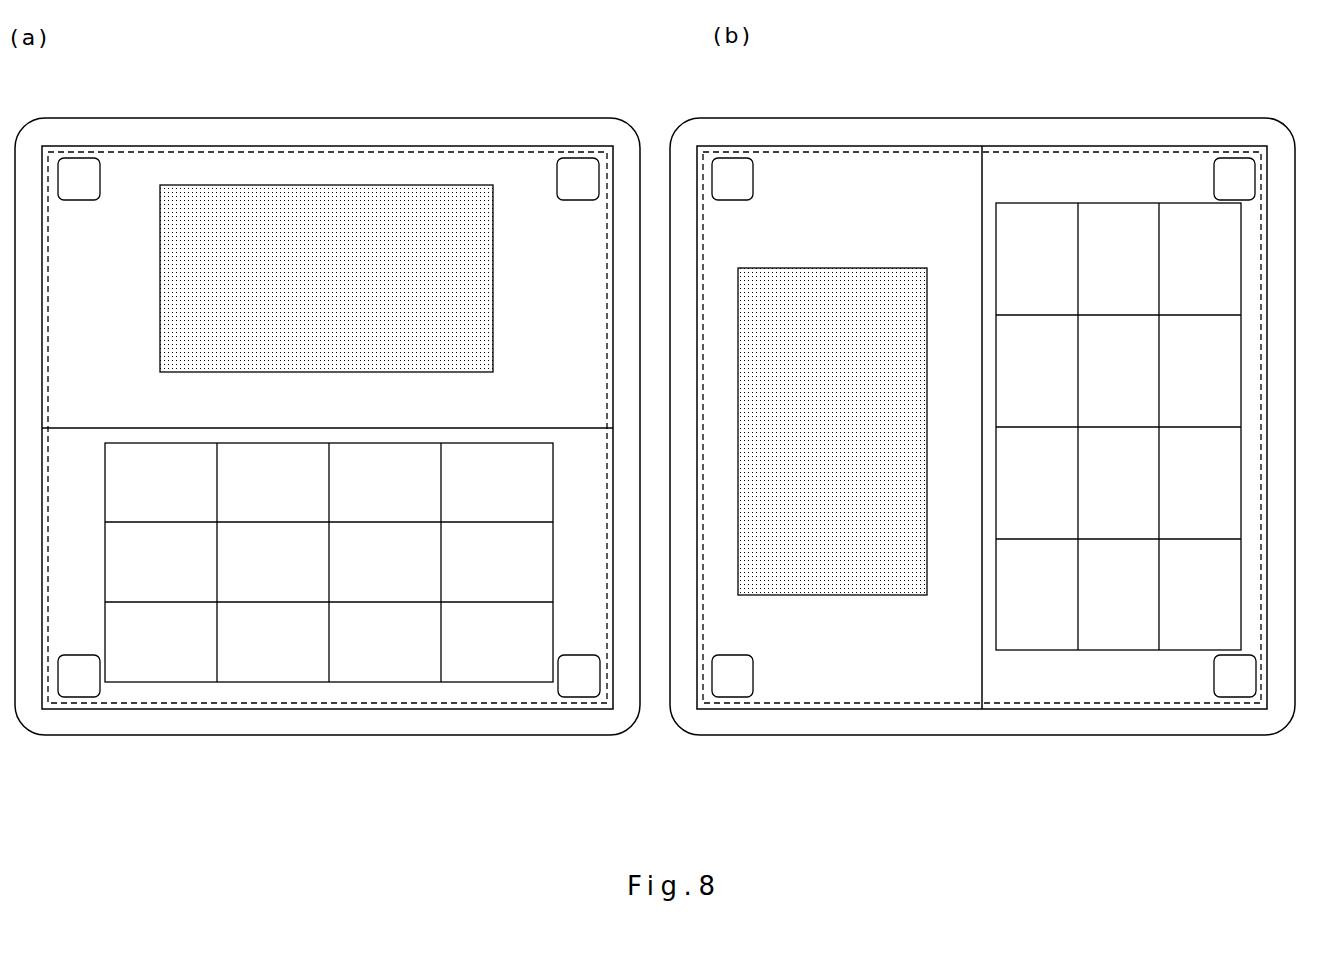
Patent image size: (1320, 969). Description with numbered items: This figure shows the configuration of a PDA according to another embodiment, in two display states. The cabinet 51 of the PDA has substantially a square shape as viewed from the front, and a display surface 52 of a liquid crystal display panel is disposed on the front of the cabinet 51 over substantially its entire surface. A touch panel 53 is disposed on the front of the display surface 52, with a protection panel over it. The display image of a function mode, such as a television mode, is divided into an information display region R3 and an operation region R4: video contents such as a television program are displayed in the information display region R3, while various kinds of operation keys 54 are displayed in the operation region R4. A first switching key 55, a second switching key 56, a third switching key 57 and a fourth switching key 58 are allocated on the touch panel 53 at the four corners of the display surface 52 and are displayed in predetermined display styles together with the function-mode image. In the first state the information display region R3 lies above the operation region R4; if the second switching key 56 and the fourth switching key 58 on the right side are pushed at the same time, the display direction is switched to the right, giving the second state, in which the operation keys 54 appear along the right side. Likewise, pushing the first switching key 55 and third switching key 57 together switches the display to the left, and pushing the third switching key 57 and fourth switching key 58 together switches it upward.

The cabinet 51 is at (442, 118).
The display surface 52 is at (313, 147).
The touch panel 53 is at (193, 147).
The operation keys 54 is at (462, 673).
The first switching key 55 is at (80, 697).
The second switching key 56 is at (585, 697).
The third switching key 57 is at (80, 158).
The fourth switching key 58 is at (578, 158).
The information display region R3 is at (148, 173).
The operation region R4 is at (641, 478).